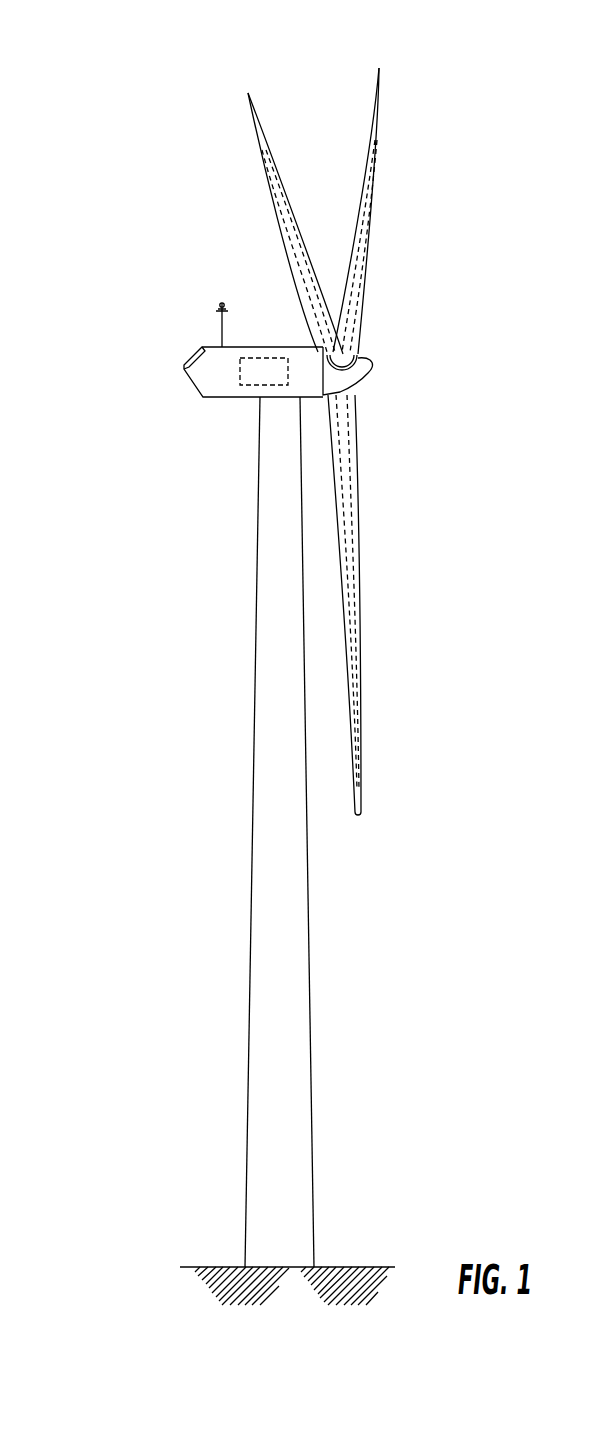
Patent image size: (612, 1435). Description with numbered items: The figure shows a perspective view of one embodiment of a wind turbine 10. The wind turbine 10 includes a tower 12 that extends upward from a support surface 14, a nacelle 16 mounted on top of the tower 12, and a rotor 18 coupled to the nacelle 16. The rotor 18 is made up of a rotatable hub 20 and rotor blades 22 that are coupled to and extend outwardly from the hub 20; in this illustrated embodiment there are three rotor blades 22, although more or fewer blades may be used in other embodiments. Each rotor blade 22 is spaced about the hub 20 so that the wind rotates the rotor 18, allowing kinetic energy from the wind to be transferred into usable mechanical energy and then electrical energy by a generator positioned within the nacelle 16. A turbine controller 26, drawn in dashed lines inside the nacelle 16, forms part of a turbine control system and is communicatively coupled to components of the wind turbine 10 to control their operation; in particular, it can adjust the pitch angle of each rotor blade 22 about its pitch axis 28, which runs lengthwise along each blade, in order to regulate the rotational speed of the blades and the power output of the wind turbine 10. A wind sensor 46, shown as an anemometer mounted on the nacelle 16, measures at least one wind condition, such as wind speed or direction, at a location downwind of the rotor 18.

The wind turbine 10 is at (130, 204).
The tower 12 is at (292, 904).
The support surface 14 is at (223, 1267).
The nacelle 16 is at (230, 398).
The rotor 18 is at (423, 302).
The rotatable hub 20 is at (370, 366).
The rotor blade 22 is at (373, 90).
The turbine controller 26 is at (266, 356).
The pitch axis 28 is at (292, 238).
The wind sensor 46 is at (214, 326).